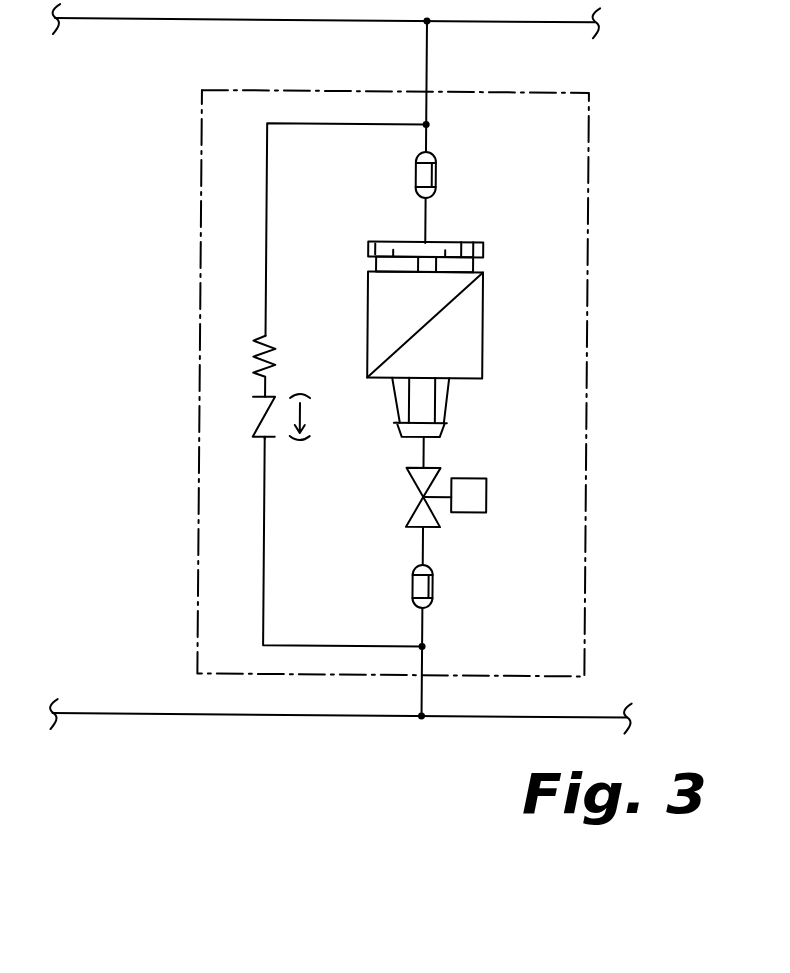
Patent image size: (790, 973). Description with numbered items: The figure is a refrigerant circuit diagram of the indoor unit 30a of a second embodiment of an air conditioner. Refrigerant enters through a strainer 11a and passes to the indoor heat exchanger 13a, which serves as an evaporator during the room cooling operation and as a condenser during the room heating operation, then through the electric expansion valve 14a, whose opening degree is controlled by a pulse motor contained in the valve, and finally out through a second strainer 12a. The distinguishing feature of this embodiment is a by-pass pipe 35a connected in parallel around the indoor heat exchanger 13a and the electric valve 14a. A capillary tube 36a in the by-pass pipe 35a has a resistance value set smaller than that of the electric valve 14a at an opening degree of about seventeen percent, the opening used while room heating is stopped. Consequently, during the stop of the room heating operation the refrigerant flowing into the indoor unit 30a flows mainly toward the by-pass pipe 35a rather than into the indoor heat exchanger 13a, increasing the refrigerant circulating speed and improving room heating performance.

The indoor unit 30a is at (592, 124).
The strainer 11a is at (438, 173).
The strainer 12a is at (438, 593).
The indoor heat exchanger 13a is at (485, 325).
The electric expansion valve 14a is at (486, 478).
The by-pass pipe 35a is at (268, 222).
The capillary tube 36a is at (284, 351).